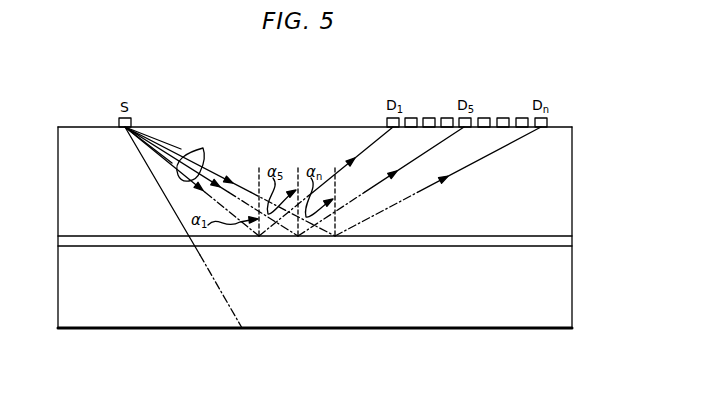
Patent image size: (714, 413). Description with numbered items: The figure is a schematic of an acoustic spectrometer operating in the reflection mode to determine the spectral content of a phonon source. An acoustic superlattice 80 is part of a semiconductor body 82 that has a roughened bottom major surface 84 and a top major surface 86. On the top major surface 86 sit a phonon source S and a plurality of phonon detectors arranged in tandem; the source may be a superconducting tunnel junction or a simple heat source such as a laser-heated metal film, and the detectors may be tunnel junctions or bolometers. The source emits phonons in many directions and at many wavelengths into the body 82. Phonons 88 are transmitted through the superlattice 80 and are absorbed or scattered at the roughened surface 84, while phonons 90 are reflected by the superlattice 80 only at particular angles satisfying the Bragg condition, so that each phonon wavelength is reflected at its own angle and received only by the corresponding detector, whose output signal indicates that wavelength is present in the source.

The acoustic superlattice 80 is at (58, 243).
The semiconductor body 82 is at (587, 112).
The roughened bottom major surface 84 is at (392, 330).
The top major surface 86 is at (93, 126).
The transmitted phonons 88 is at (152, 171).
The reflected phonons 90 is at (210, 144).